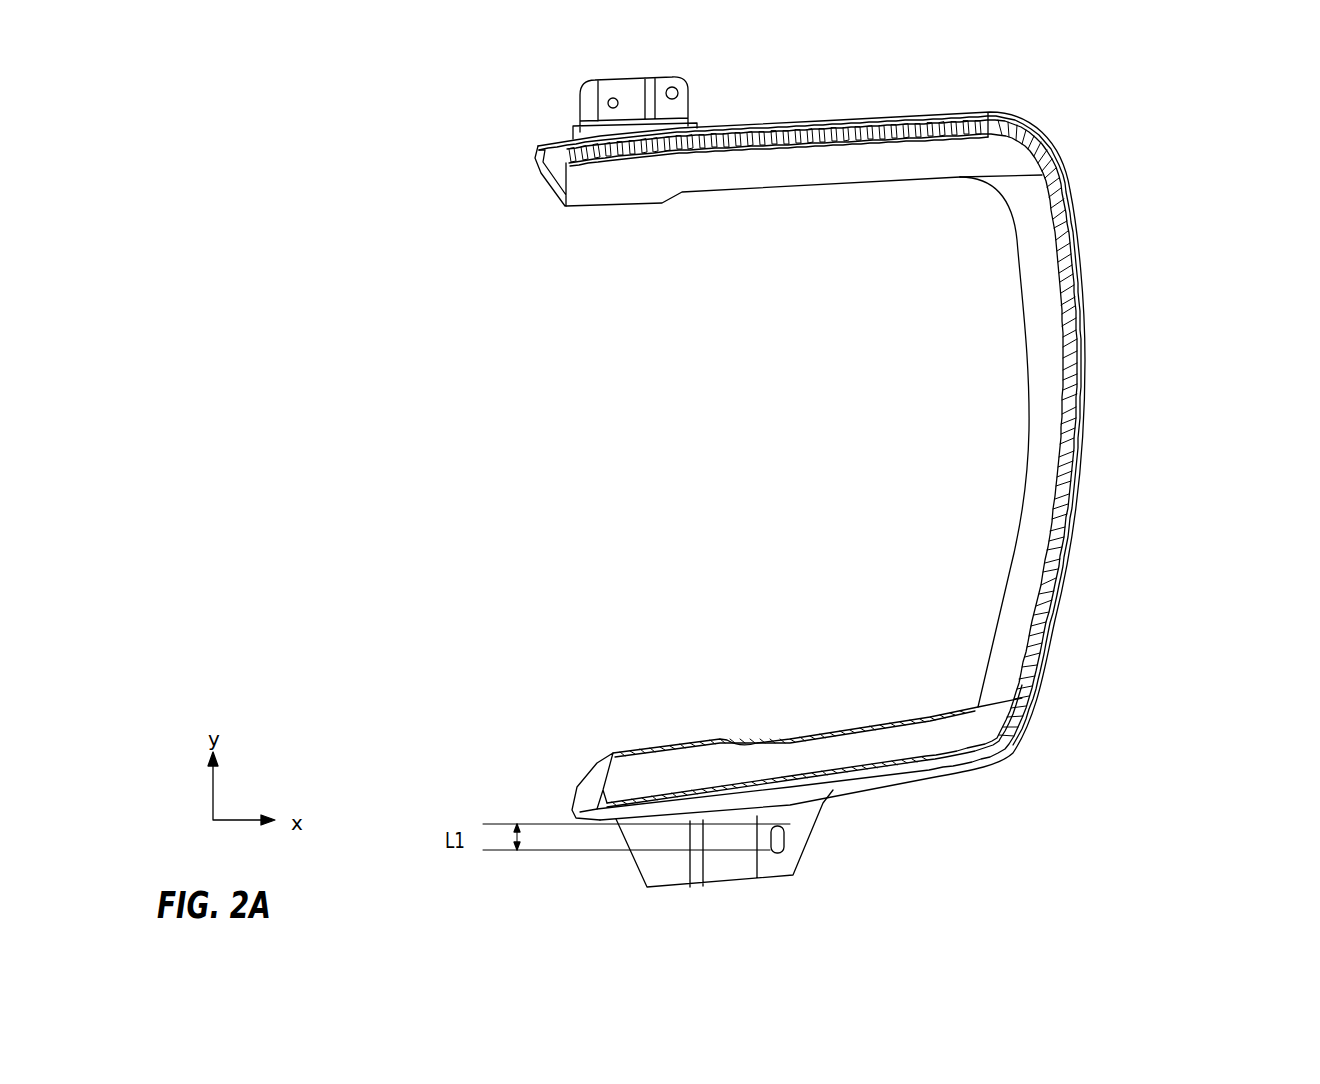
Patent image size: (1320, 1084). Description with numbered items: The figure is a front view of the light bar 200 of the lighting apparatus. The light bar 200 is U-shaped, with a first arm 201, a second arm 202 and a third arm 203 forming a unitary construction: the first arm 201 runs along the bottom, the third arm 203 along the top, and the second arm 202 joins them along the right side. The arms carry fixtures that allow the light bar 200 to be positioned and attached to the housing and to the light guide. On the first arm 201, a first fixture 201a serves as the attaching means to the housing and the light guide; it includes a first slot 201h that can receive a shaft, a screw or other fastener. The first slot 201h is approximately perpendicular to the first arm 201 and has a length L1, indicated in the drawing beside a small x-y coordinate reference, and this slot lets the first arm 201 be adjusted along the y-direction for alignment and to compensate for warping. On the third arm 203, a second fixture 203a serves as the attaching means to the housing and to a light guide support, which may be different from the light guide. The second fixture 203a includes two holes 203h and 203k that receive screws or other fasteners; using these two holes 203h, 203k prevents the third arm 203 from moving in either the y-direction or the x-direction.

The light bar 200 is at (1190, 184).
The first arm 201 is at (853, 732).
The first fixture 201a is at (812, 832).
The first slot 201h is at (784, 855).
The second arm 202 is at (1022, 497).
The third arm 203 is at (735, 178).
The second fixture 203a is at (579, 108).
The hole 203h is at (679, 99).
The hole 203k is at (612, 99).